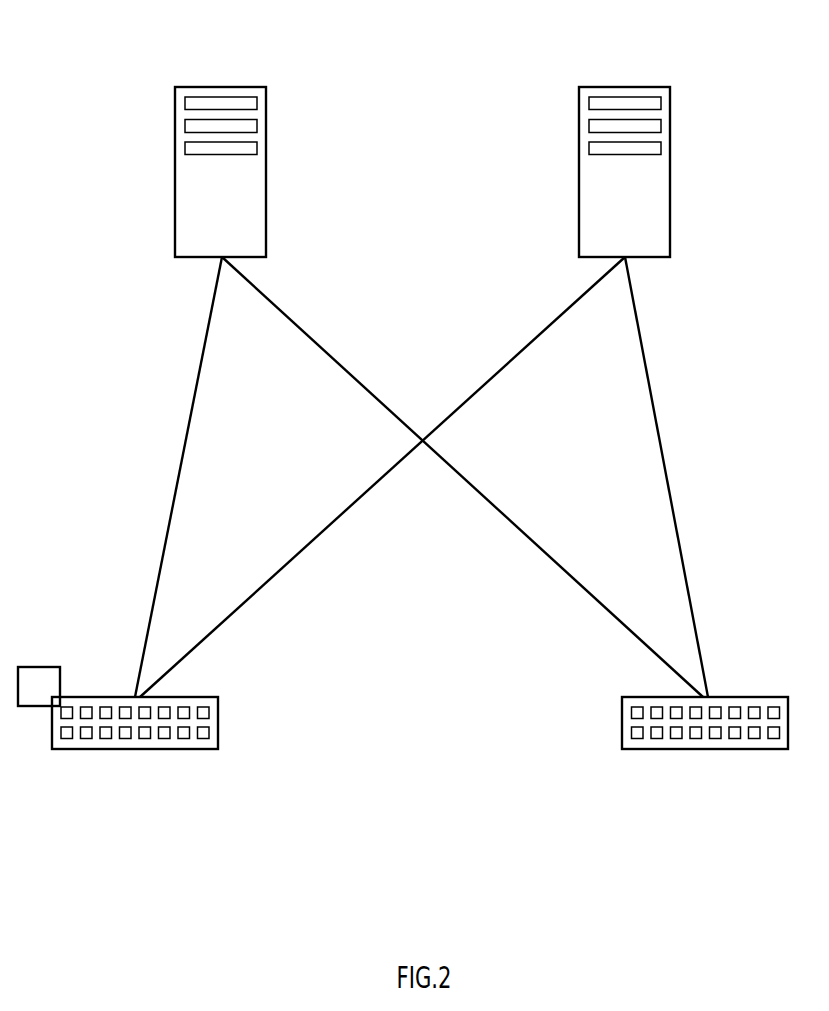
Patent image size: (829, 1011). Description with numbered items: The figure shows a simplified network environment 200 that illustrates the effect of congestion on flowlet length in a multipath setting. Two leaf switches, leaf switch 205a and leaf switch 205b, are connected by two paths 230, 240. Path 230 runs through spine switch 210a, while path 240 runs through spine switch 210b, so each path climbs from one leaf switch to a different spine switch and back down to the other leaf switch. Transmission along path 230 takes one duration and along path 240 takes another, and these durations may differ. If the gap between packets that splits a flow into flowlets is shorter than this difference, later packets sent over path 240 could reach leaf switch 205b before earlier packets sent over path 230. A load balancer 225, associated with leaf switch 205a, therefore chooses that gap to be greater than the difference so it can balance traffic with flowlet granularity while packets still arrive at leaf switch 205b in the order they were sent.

The network environment 200 is at (99, 37).
The spine switch 210a is at (175, 170).
The spine switch 210b is at (579, 170).
The leaf switch 205a is at (90, 750).
The leaf switch 205b is at (660, 750).
The load balancer 225 is at (52, 696).
The path 230 is at (168, 511).
The path 240 is at (290, 559).